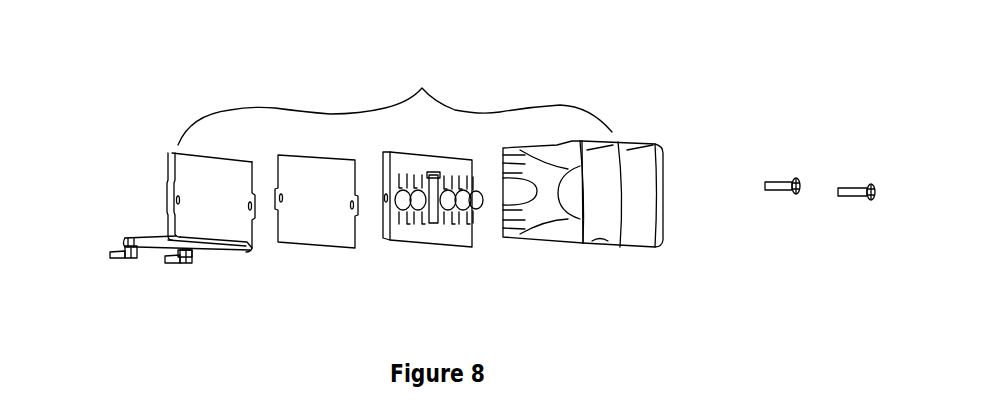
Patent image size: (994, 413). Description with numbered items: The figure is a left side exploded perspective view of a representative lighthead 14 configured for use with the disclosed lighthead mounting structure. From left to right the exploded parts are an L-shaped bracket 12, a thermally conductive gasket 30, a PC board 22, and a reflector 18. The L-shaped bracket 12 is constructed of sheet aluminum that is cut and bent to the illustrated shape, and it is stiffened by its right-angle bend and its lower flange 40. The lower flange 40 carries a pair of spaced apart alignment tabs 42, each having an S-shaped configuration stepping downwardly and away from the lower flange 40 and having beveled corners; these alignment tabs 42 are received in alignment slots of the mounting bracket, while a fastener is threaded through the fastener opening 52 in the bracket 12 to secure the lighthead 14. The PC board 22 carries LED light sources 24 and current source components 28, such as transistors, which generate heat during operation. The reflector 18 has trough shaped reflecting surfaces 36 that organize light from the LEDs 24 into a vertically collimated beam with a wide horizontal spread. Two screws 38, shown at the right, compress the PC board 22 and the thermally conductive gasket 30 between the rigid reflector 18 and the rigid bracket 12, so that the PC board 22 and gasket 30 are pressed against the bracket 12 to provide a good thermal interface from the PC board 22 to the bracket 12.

The L-shaped bracket 12 is at (170, 155).
The lighthead 14 is at (422, 88).
The reflector 18 is at (567, 243).
The PC board 22 is at (430, 243).
The LED light sources 24 is at (400, 172).
The current source components 28 is at (437, 173).
The thermally conductive gasket 30 is at (303, 233).
The trough shaped reflecting surfaces 36 is at (617, 247).
The screws 38 is at (772, 192).
The lower flange 40 is at (155, 240).
The alignment tabs 42 is at (120, 265).
The fastener opening 52 is at (195, 257).